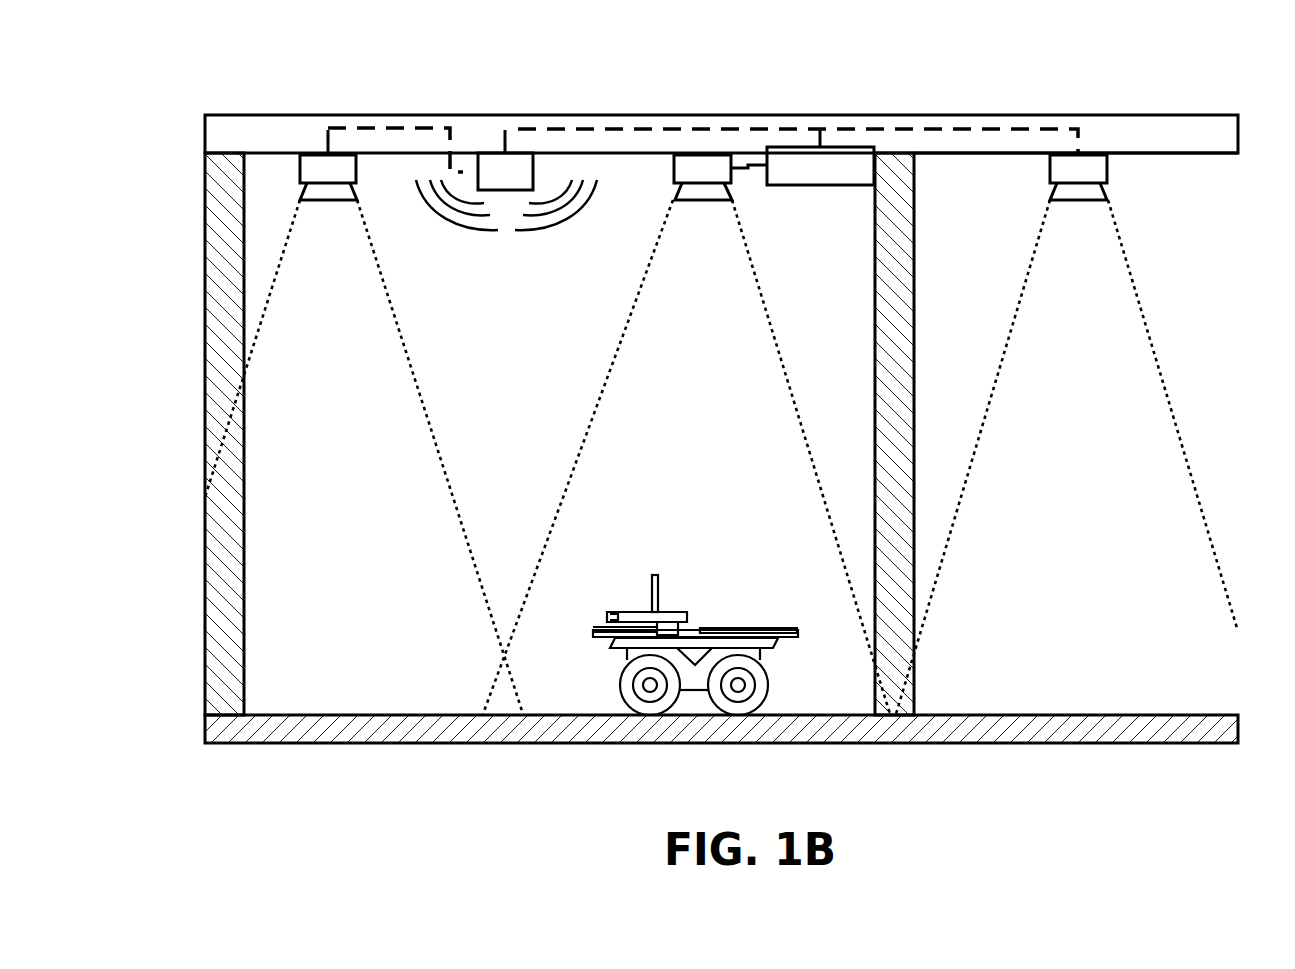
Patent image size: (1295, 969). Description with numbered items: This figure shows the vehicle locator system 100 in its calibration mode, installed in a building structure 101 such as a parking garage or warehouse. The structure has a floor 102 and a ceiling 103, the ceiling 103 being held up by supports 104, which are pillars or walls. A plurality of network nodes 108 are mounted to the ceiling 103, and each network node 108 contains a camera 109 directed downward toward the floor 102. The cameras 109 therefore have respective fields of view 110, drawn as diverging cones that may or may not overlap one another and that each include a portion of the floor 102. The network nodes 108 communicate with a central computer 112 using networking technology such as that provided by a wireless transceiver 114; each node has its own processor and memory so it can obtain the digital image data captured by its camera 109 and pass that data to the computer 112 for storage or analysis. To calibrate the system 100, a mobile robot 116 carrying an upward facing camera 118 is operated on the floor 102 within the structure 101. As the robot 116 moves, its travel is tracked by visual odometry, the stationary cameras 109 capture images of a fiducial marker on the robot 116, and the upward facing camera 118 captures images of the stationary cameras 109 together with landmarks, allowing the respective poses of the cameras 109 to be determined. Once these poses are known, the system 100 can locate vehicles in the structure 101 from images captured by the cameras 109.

The vehicle locator system 100 is at (712, 83).
The building structure 101 is at (205, 172).
The floor 102 is at (310, 714).
The ceiling 103 is at (940, 153).
The supports 104 is at (244, 450).
The network nodes 108 is at (358, 183).
The cameras 109 is at (322, 205).
The fields of view 110 is at (431, 533).
The central computer 112 is at (820, 166).
The wireless transceiver 114 is at (506, 191).
The mobile robot 116 is at (733, 598).
The upward facing camera 118 is at (655, 573).